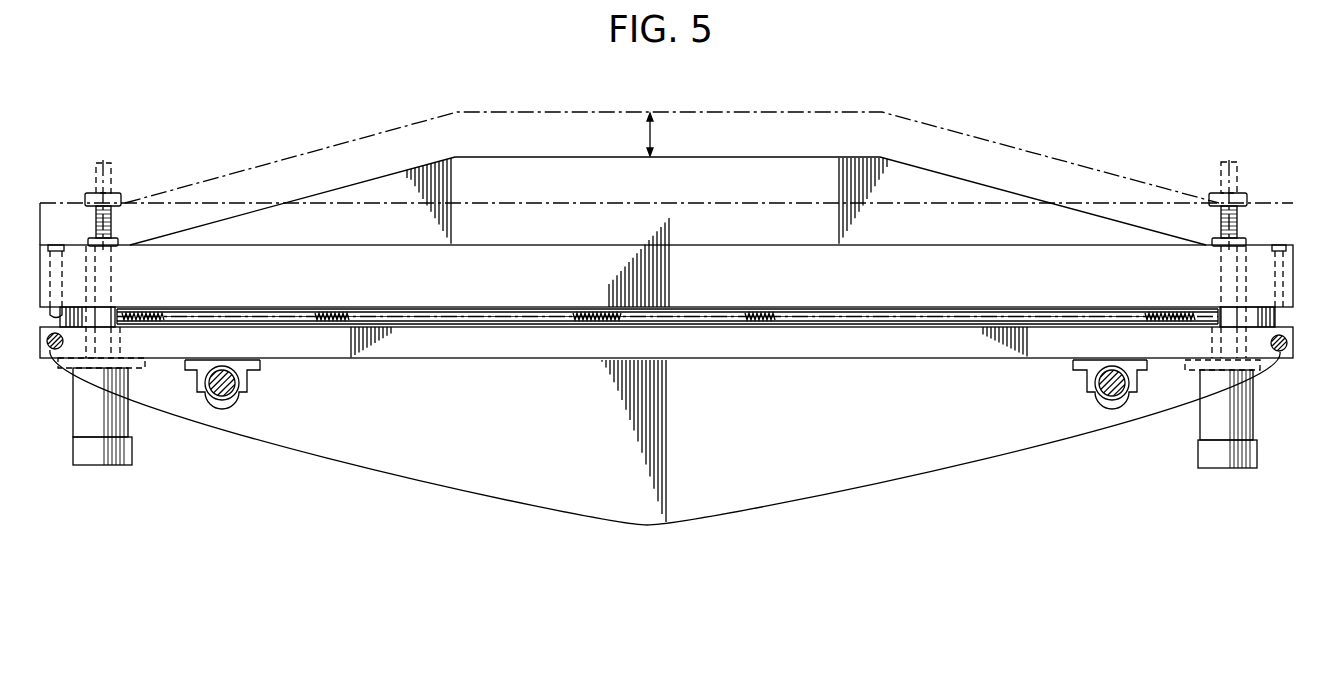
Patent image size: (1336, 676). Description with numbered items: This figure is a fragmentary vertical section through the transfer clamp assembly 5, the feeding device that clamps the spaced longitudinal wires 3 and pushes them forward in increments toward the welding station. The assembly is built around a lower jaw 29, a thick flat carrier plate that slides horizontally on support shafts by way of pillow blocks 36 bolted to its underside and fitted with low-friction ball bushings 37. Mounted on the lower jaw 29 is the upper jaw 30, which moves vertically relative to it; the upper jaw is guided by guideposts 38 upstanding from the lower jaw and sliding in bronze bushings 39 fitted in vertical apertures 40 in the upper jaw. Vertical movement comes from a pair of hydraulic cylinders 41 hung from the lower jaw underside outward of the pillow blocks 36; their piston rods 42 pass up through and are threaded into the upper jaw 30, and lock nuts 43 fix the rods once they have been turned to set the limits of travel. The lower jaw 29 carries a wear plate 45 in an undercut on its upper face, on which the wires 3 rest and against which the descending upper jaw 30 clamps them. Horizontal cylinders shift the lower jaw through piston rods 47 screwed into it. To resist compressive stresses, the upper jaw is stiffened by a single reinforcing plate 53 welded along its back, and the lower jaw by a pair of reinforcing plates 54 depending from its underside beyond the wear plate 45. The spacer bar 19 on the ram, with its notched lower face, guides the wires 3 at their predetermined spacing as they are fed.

The transfer clamp assembly 5 is at (897, 165).
The reinforcing plate 53 is at (538, 236).
The reinforcing plates 54 is at (522, 424).
The upper jaw 30 is at (708, 284).
The lower jaw 29 is at (885, 354).
The spacer bar 19 is at (132, 313).
The longitudinal wires 3 is at (343, 322).
The wear plate 45 is at (245, 320).
The guideposts 38 is at (58, 310).
The vertical apertures 40 is at (50, 240).
The piston rods 42 is at (95, 278).
The lock nuts 43 is at (117, 242).
The bushings 39 is at (91, 279).
The piston rods 47 is at (75, 387).
The hydraulic cylinders 41 is at (78, 413).
The pillow blocks 36 is at (250, 397).
The bushings 37 is at (245, 380).